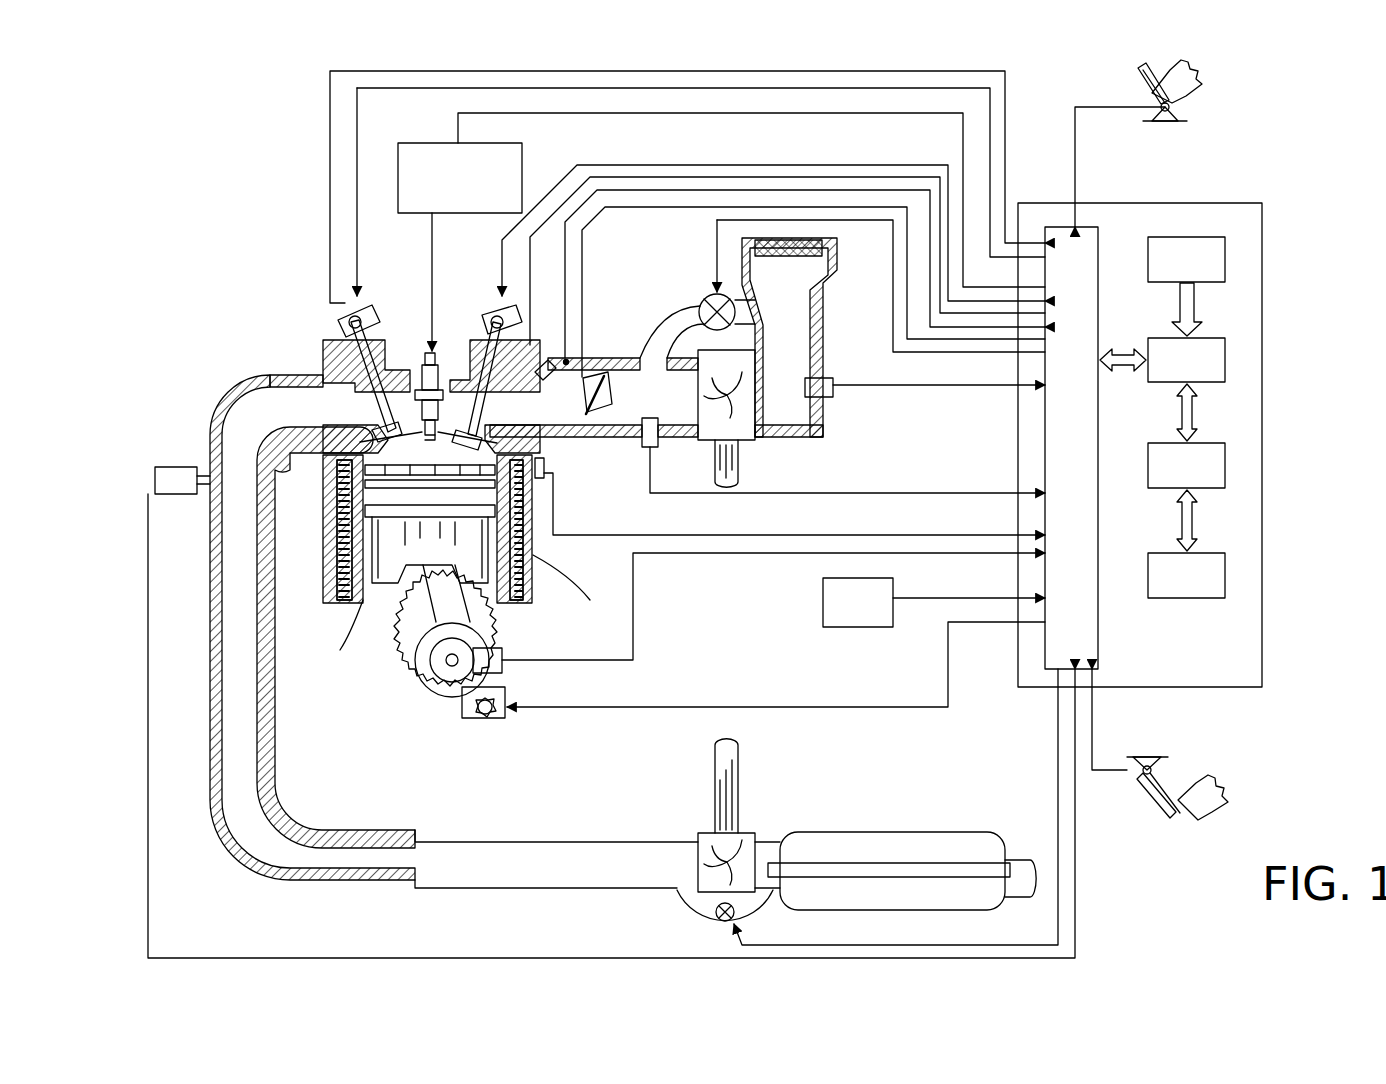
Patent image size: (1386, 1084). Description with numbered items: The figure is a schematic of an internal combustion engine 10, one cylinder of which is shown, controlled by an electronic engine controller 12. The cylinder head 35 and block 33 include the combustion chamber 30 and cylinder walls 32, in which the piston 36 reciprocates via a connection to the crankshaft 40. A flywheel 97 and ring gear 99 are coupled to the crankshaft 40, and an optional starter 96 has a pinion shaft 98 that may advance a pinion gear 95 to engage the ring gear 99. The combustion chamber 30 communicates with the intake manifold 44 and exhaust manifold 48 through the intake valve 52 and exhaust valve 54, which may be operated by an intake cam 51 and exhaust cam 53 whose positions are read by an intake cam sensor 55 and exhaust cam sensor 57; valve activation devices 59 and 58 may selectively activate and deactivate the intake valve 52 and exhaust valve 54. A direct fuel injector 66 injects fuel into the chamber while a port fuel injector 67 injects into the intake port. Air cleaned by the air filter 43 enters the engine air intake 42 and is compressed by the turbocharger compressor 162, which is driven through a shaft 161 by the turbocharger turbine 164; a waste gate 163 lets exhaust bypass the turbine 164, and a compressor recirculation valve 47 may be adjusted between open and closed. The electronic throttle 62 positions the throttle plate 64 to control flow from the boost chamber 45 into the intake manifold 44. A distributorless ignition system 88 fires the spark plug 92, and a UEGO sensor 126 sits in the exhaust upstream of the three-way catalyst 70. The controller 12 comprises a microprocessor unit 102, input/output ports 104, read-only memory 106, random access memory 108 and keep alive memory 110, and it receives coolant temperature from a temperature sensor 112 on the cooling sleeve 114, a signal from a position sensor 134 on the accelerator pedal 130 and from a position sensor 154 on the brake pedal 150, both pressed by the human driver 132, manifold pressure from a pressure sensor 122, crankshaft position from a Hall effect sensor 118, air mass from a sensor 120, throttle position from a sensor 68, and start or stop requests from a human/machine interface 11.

The internal combustion engine 10 is at (258, 292).
The human/machine interface 11 is at (934, 602).
The electronic engine controller 12 is at (1262, 205).
The combustion chamber 30 is at (360, 480).
The cylinder walls 32 is at (336, 636).
The block 33 is at (318, 488).
The cylinder head 35 is at (318, 338).
The piston 36 is at (415, 580).
The crankshaft 40 is at (435, 688).
The engine air intake 42 is at (672, 266).
The air filter 43 is at (808, 256).
The intake manifold 44 is at (570, 413).
The boost chamber 45 is at (678, 413).
The compressor recirculation valve 47 is at (712, 294).
The exhaust manifold 48 is at (308, 422).
The intake cam 51 is at (751, 233).
The intake valve 52 is at (470, 418).
The exhaust cam 53 is at (701, 192).
The exhaust valve 54 is at (355, 374).
The intake cam sensor 55 is at (508, 328).
The exhaust cam sensor 57 is at (345, 320).
The valve activation device 58 is at (364, 320).
The valve activation device 59 is at (492, 325).
The electronic throttle 62 is at (598, 398).
The throttle plate 64 is at (592, 410).
The direct fuel injector 66 is at (547, 480).
The port fuel injector 67 is at (543, 358).
The throttle position sensor 68 is at (578, 362).
The three-way catalyst 70 is at (820, 832).
The distributorless ignition system 88 is at (522, 152).
The spark plug 92 is at (448, 350).
The pinion gear 95 is at (495, 720).
The starter 96 is at (497, 718).
The flywheel 97 is at (425, 670).
The pinion shaft 98 is at (480, 715).
The ring gear 99 is at (445, 700).
The microprocessor unit 102 is at (1225, 362).
The input/output ports 104 is at (1100, 238).
The read-only memory 106 is at (1225, 262).
The random access memory 108 is at (1225, 466).
The keep alive memory 110 is at (1225, 576).
The temperature sensor 112 is at (794, 504).
The cooling sleeve 114 is at (583, 592).
The Hall effect sensor 118 is at (502, 648).
The air mass sensor 120 is at (828, 380).
The pressure sensor 122 is at (642, 440).
The Universal Exhaust Gas Oxygen sensor 126 is at (155, 470).
The accelerator pedal 130 is at (1145, 86).
The human driver 132 is at (1196, 58).
The position sensor 134 is at (1175, 110).
The brake pedal 150 is at (1172, 818).
The position sensor 154 is at (1133, 768).
The shaft 161 is at (712, 455).
The turbocharger compressor 162 is at (740, 405).
The waste gate 163 is at (720, 922).
The turbocharger turbine 164 is at (700, 836).